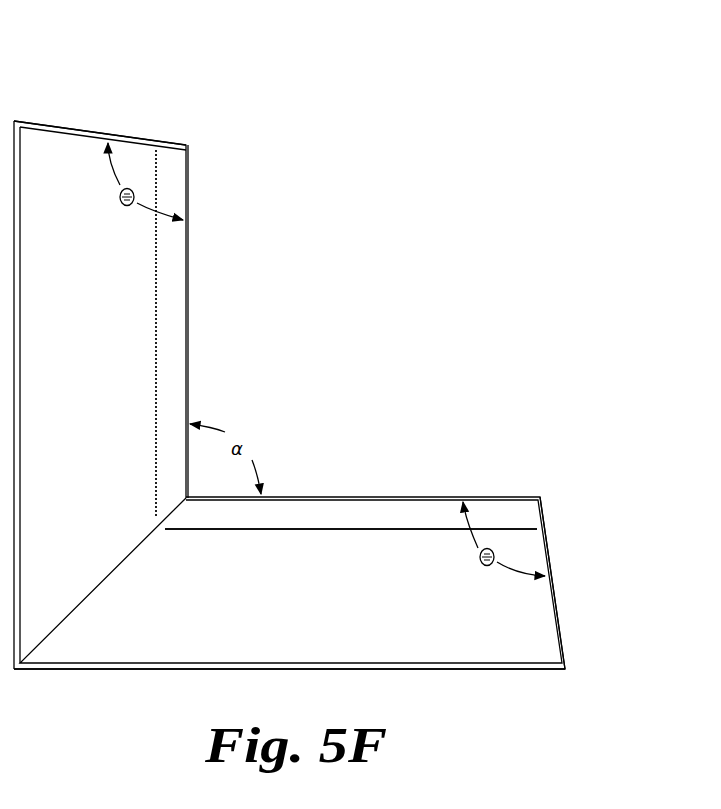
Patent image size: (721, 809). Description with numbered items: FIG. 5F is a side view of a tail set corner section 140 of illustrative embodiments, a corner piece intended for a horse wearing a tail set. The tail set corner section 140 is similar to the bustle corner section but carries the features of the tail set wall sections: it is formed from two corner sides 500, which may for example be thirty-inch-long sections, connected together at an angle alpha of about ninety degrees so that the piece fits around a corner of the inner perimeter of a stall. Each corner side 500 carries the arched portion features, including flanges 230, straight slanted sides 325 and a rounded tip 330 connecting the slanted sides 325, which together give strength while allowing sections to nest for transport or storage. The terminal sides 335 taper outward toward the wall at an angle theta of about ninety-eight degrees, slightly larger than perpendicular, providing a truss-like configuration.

The tail set corner section 140 is at (306, 400).
The flange 230 is at (485, 670).
The straight slanted side 325 is at (360, 612).
The rounded tip 330 is at (302, 515).
The terminal side 335 is at (69, 127).
The corner side 500 is at (187, 290).